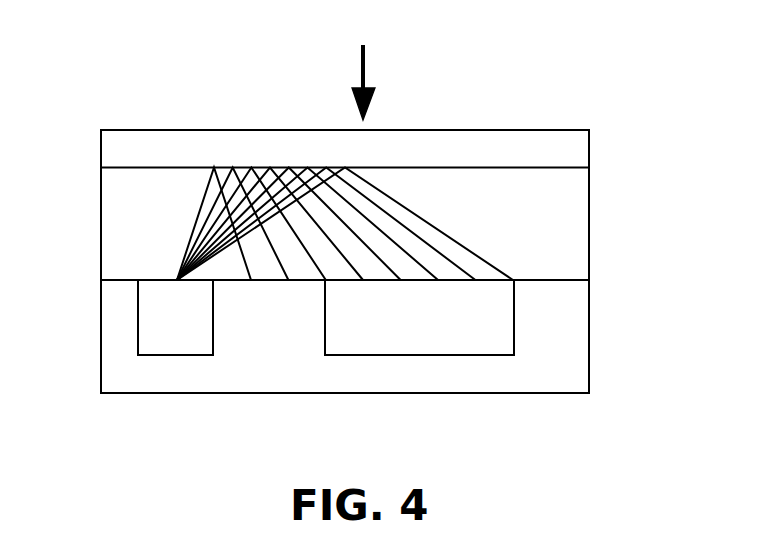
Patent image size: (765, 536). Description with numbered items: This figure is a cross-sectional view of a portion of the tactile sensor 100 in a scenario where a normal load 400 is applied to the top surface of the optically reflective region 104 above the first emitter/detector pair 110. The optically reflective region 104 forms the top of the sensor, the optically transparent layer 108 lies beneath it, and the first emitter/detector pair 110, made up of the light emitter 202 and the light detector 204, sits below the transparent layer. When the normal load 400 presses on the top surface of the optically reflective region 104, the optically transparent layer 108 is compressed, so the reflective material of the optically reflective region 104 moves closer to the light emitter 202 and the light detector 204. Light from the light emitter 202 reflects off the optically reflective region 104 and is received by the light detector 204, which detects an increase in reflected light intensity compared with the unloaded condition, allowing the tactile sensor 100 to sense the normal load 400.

The tactile sensor 100 is at (590, 75).
The optically reflective region 104 is at (420, 140).
The optically transparent layer 108 is at (118, 243).
The first emitter/detector pair 110 is at (570, 343).
The light emitter 202 is at (176, 343).
The light detector 204 is at (430, 343).
The normal load 400 is at (365, 71).